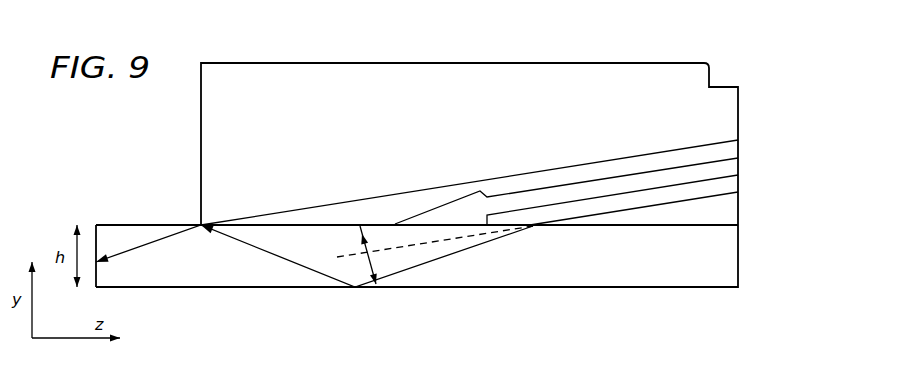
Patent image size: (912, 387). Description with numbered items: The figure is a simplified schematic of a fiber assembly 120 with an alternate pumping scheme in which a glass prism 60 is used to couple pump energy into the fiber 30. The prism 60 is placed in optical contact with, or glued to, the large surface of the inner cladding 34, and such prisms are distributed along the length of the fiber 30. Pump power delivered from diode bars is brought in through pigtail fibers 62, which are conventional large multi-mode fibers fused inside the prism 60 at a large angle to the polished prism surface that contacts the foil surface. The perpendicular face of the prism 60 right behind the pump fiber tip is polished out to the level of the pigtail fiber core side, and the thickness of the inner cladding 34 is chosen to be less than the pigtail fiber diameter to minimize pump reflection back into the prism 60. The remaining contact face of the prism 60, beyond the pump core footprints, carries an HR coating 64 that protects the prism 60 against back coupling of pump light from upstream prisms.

The fiber assembly 120 is at (653, 42).
The glass prism 60 is at (360, 63).
The pigtail fiber 62 is at (728, 153).
The HR coating 64 is at (713, 227).
The inner cladding 34 is at (486, 267).
The fiber 30 is at (695, 287).